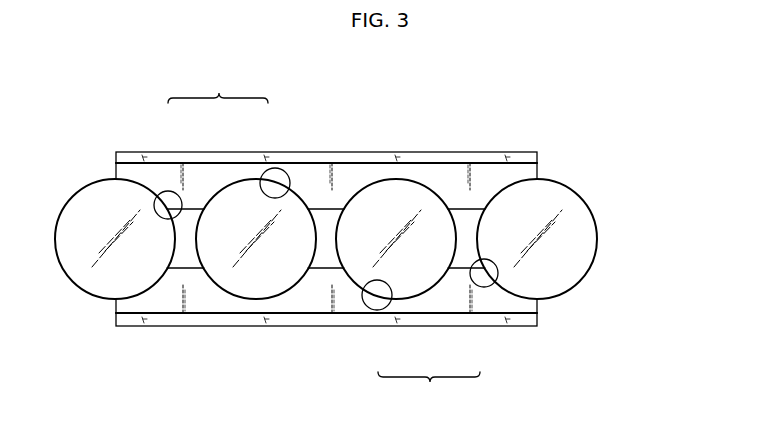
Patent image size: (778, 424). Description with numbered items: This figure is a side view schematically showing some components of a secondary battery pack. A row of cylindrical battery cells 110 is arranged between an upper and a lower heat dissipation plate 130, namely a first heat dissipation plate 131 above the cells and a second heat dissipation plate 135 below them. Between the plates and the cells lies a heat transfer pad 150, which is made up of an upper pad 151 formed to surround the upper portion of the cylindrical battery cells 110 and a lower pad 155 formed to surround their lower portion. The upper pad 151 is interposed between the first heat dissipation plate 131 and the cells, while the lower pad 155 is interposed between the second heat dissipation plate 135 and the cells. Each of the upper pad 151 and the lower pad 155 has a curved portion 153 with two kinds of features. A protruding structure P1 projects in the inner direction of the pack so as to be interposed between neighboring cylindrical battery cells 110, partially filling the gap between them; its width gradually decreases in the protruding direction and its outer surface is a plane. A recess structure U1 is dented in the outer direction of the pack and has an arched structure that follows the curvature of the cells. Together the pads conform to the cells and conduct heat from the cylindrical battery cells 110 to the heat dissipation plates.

The cylindrical battery cell 110 is at (86, 187).
The heat dissipation plate 130 is at (413, 238).
The first heat dissipation plate 131 is at (537, 154).
The second heat dissipation plate 135 is at (537, 322).
The heat transfer pad 150 is at (411, 238).
The upper pad 151 is at (530, 169).
The lower pad 155 is at (385, 289).
The curved portion 153 is at (324, 240).
The protruding structure P1 is at (157, 195).
The recess structure U1 is at (289, 168).